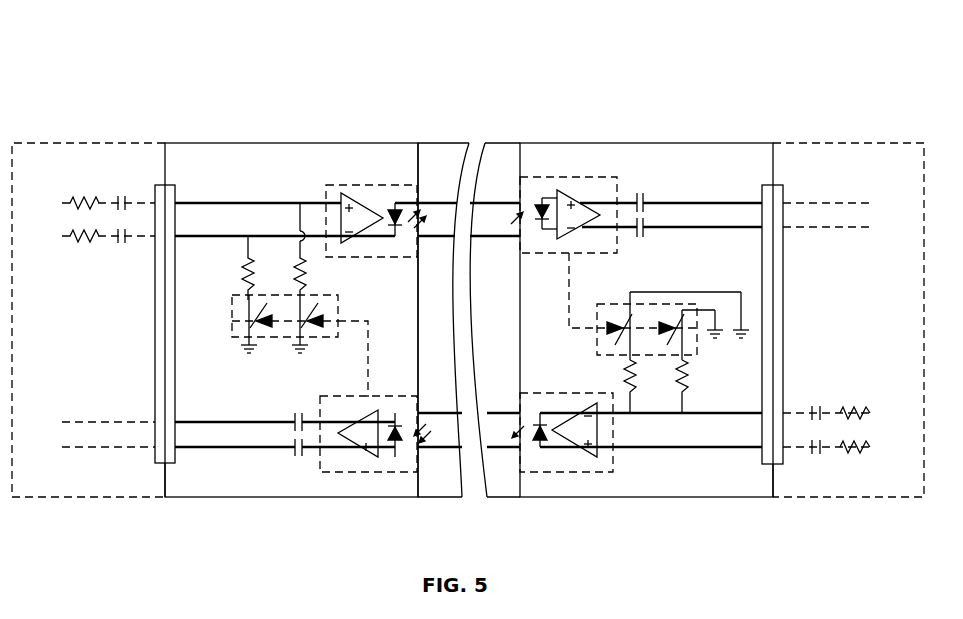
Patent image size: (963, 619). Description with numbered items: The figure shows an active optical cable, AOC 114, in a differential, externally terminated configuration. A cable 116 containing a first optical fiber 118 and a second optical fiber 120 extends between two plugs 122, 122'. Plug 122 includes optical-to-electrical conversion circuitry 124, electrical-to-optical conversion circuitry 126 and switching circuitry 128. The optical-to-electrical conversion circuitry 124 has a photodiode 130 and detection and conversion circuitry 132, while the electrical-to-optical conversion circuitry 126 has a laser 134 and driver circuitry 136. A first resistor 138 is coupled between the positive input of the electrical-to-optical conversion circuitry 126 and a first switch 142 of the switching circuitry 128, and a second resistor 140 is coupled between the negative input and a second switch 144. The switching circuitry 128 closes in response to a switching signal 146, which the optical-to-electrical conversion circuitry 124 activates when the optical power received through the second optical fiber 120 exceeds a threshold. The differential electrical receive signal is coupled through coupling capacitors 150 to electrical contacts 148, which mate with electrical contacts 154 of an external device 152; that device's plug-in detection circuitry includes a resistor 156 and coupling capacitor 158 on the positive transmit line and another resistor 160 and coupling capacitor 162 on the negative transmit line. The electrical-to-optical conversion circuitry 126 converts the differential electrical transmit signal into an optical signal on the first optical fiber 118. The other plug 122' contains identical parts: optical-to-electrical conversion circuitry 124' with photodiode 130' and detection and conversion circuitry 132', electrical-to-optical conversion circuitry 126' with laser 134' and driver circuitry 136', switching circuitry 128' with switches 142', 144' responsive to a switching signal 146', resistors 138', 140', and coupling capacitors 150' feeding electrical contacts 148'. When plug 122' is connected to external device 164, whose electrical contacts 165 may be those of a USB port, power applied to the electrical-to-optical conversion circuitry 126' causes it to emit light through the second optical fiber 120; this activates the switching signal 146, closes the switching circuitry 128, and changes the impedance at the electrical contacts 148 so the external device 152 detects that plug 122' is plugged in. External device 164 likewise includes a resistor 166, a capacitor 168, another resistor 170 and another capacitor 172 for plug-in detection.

The AOC 114 is at (509, 88).
The cable 116 is at (422, 143).
The first optical fiber 118 is at (480, 240).
The second optical fiber 120 is at (446, 412).
The plug 122 is at (291, 296).
The plug 122' is at (646, 292).
The optical-to-electrical conversion circuitry 124 is at (391, 465).
The optical-to-electrical conversion circuitry 124' is at (547, 182).
The electrical-to-optical conversion circuitry 126 is at (395, 198).
The electrical-to-optical conversion circuitry 126' is at (545, 447).
The switching circuitry 128 is at (263, 341).
The switching circuitry 128' is at (657, 308).
The photodiode 130 is at (429, 445).
The photodiode 130' is at (516, 197).
The detection and conversion circuitry 132 is at (344, 456).
The detection and conversion circuitry 132' is at (575, 189).
The laser 134 is at (426, 201).
The laser 134' is at (512, 405).
The driver circuitry 136 is at (376, 241).
The driver circuitry 136' is at (572, 408).
The first resistor 138 is at (330, 251).
The resistor 138' is at (716, 386).
The second resistor 140 is at (220, 268).
The resistor 140' is at (650, 402).
The first switch 142 is at (313, 336).
The switch 142' is at (600, 316).
The second switch 144 is at (230, 331).
The switch 144' is at (703, 338).
The switching signal 146 is at (374, 357).
The switching signal 146' is at (560, 291).
The electrical contacts 148 is at (179, 358).
The electrical contacts 148' is at (760, 358).
The coupling capacitors 150 is at (270, 447).
The coupling capacitors 150' is at (669, 201).
The external device 152 is at (93, 143).
The electrical contacts 154 is at (160, 465).
The resistor 156 is at (82, 200).
The coupling capacitor 158 is at (122, 198).
The resistor 160 is at (79, 240).
The coupling capacitor 162 is at (122, 242).
The external device 164 is at (850, 143).
The electrical contacts 165 is at (783, 466).
The resistor 166 is at (858, 408).
The capacitor 168 is at (816, 408).
The resistor 170 is at (859, 454).
The capacitor 172 is at (817, 454).